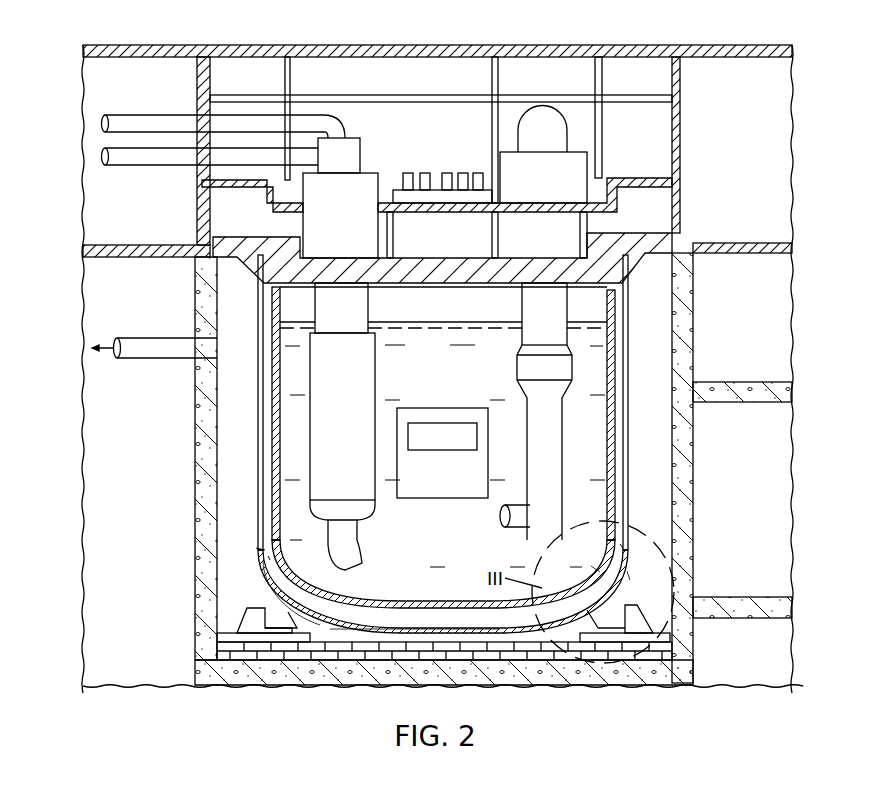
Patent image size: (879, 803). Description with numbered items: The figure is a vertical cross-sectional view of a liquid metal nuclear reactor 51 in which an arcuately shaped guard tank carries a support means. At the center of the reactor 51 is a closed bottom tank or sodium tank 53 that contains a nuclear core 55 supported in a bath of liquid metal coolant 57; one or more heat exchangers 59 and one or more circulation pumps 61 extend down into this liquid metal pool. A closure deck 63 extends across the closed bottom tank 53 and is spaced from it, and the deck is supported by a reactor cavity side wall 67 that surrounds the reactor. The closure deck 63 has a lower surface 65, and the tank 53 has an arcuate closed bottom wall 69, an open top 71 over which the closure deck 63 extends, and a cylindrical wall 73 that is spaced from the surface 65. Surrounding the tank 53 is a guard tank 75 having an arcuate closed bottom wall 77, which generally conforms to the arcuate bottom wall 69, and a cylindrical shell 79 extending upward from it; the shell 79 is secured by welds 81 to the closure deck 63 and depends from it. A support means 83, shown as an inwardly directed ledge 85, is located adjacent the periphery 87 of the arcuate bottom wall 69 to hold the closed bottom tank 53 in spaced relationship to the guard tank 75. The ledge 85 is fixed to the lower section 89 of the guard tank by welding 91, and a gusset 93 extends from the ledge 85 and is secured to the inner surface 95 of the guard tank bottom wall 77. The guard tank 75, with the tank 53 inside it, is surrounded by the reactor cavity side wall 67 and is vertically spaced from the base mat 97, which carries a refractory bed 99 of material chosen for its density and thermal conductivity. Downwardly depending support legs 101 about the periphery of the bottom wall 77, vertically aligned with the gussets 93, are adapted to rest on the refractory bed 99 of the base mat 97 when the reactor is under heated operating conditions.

The reactor 51 is at (578, 40).
The closed bottom tank 53 is at (443, 445).
The nuclear core 55 is at (432, 485).
The liquid metal coolant 57 is at (493, 338).
The heat exchanger 59 is at (336, 432).
The circulation pump 61 is at (531, 473).
The closure deck 63 is at (447, 258).
The lower surface 65 is at (417, 292).
The reactor cavity side wall 67 is at (197, 283).
The arcuate closed bottom wall 69 is at (447, 600).
The open top 71 is at (305, 287).
The cylindrical wall 73 is at (280, 412).
The guard tank 75 is at (550, 610).
The arcuate closed bottom wall 77 is at (380, 628).
The cylindrical shell 79 is at (258, 441).
The welds 81 is at (257, 286).
The support means 83 is at (615, 575).
The inwardly directed ledge 85 is at (268, 556).
The periphery 87 is at (591, 566).
The lower section 89 is at (272, 562).
The welding 91 is at (620, 544).
The gusset 93 is at (277, 578).
The inner surface 95 is at (627, 571).
The base mat 97 is at (280, 672).
The refractory bed 99 is at (633, 657).
The support legs 101 is at (625, 599).